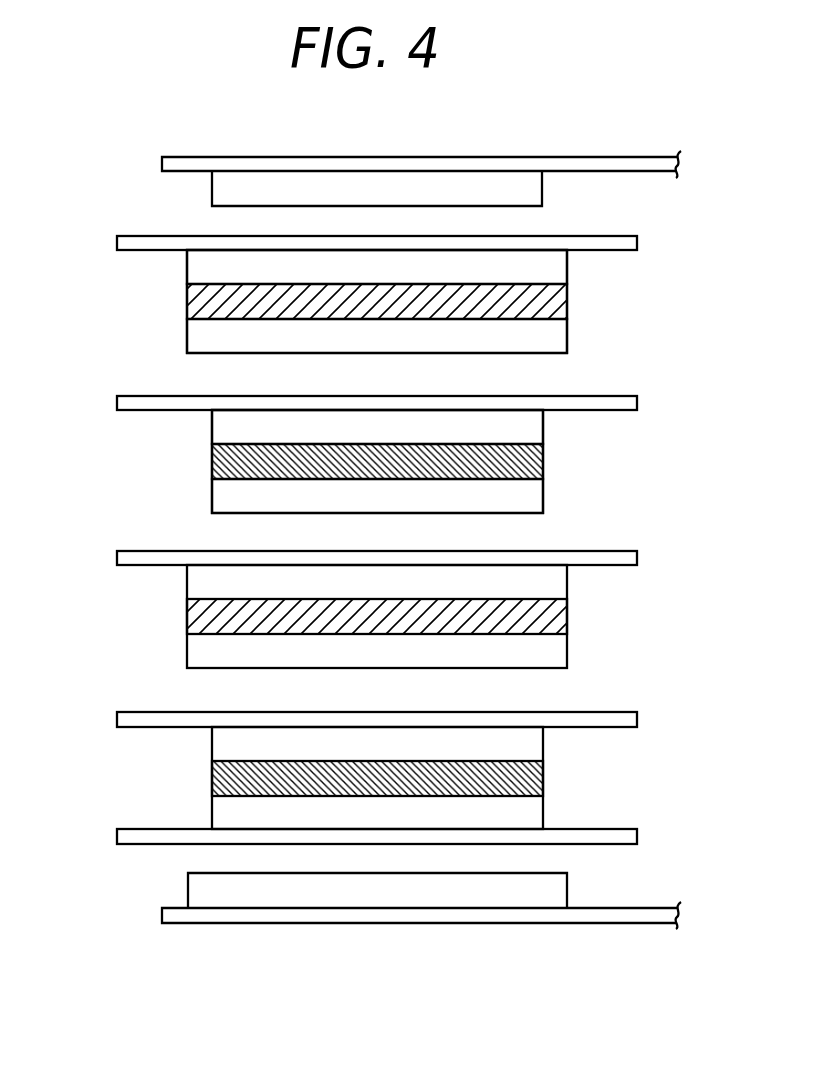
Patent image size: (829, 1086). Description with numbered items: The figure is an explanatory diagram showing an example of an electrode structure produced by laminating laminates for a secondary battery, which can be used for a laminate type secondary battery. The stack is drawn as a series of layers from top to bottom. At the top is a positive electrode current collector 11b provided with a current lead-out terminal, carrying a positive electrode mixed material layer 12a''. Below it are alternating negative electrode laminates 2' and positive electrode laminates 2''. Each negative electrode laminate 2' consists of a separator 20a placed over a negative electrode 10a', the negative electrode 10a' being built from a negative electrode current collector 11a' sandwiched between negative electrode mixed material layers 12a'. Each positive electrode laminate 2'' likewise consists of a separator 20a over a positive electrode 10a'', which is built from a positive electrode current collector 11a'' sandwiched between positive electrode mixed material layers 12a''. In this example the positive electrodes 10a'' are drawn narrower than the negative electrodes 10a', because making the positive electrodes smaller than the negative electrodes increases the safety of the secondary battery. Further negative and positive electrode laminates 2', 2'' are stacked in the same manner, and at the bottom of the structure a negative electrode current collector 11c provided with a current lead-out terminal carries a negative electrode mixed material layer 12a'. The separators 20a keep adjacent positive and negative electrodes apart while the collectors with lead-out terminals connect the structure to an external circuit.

The positive electrode current collector provided with a current lead-out terminal 11b is at (368, 160).
The negative electrode current collector provided with a current lead-out terminal 11c is at (369, 925).
The negative electrode mixed material layer 12a' is at (382, 579).
The positive electrode mixed material layer 12a'' is at (394, 342).
The negative electrode current collector 11a' is at (447, 301).
The positive electrode current collector 11a'' is at (461, 461).
The negative electrode 10a' is at (477, 301).
The positive electrode 10a'' is at (492, 461).
The separator 20a is at (633, 246).
The negative electrode laminate 2' is at (461, 445).
The positive electrode laminate 2'' is at (463, 613).